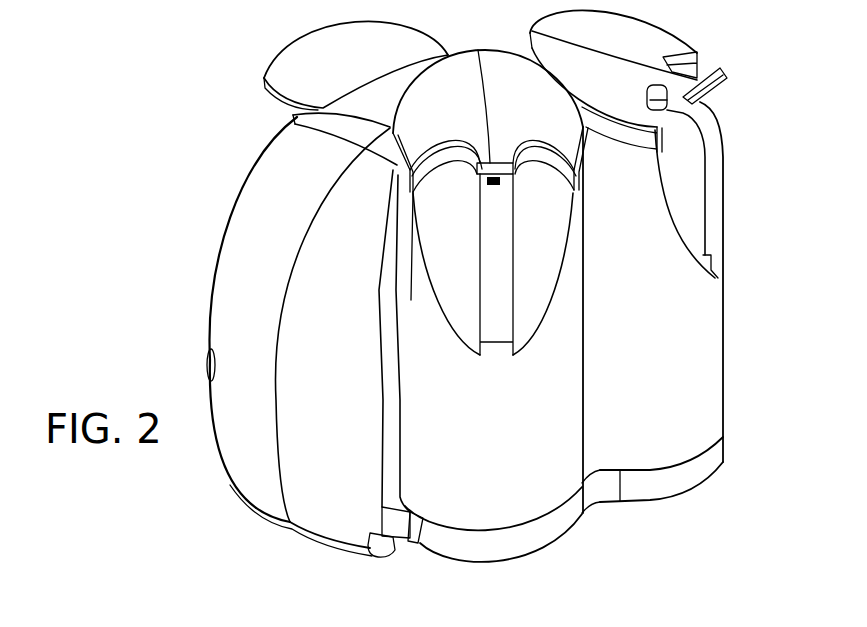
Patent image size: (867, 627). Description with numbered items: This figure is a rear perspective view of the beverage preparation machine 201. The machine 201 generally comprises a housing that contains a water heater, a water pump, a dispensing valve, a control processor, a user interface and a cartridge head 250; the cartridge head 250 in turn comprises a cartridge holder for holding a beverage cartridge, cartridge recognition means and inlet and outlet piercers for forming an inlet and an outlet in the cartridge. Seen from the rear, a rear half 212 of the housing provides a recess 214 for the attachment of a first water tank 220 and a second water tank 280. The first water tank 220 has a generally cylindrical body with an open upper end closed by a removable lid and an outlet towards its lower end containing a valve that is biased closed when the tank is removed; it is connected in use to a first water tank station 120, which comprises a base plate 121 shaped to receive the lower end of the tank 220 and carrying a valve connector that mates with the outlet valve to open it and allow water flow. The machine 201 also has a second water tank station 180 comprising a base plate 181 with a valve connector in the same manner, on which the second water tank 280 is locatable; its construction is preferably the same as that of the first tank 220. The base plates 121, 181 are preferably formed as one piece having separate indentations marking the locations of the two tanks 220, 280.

The beverage preparation machine 201 is at (188, 256).
The cartridge head 250 is at (243, 77).
The rear half 212 is at (330, 512).
The recess 214 is at (390, 428).
The first water tank 220 is at (449, 537).
The first water tank station 120 is at (593, 515).
The base plate 121 is at (574, 521).
The second water tank station 180 is at (677, 490).
The base plate 181 is at (714, 460).
The second water tank 280 is at (708, 352).